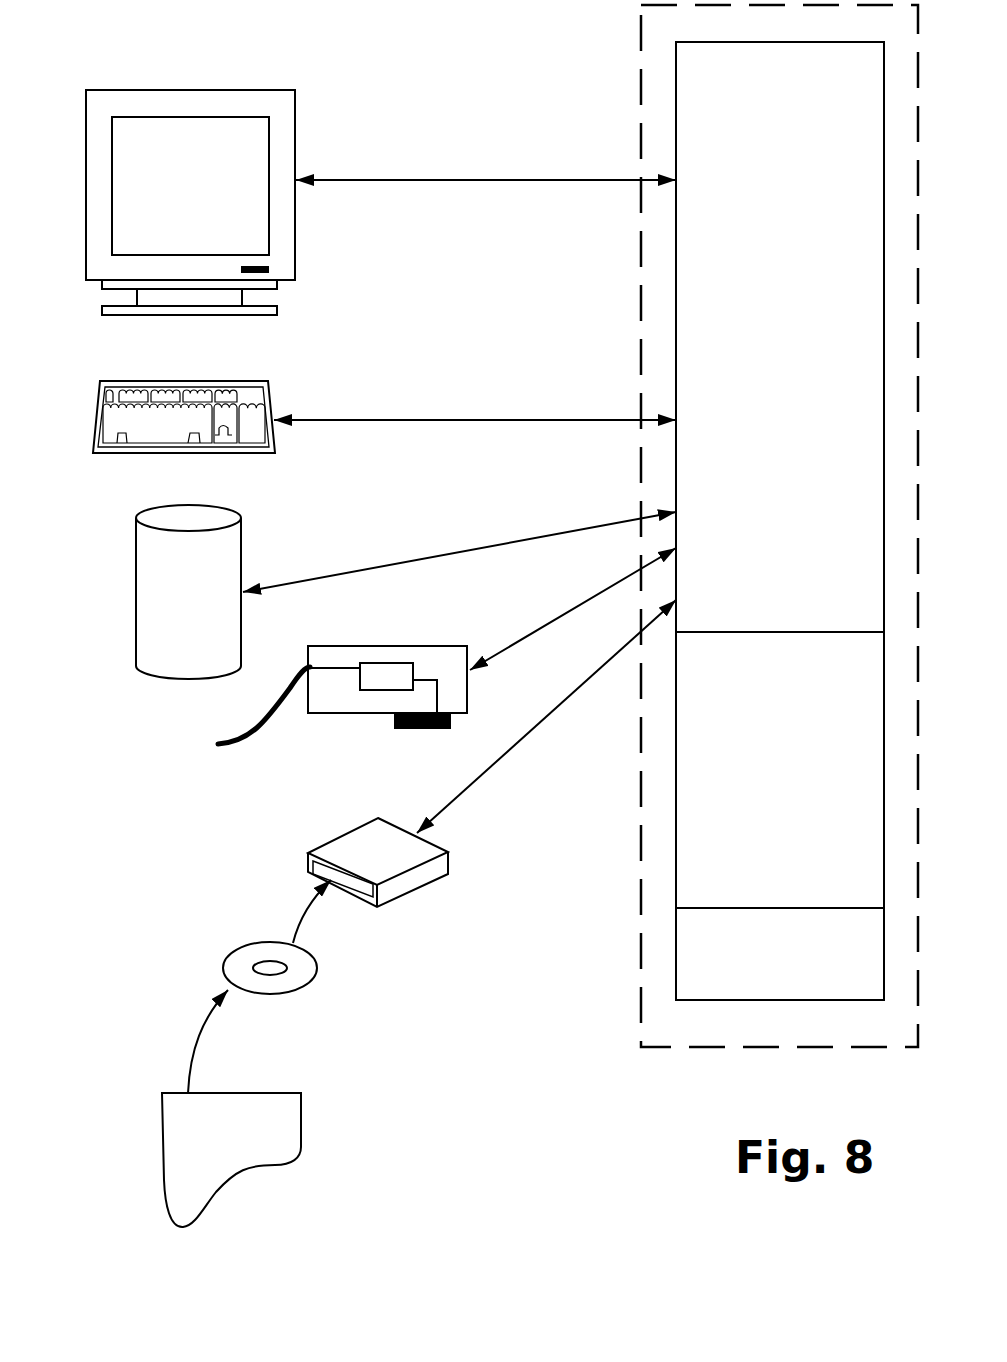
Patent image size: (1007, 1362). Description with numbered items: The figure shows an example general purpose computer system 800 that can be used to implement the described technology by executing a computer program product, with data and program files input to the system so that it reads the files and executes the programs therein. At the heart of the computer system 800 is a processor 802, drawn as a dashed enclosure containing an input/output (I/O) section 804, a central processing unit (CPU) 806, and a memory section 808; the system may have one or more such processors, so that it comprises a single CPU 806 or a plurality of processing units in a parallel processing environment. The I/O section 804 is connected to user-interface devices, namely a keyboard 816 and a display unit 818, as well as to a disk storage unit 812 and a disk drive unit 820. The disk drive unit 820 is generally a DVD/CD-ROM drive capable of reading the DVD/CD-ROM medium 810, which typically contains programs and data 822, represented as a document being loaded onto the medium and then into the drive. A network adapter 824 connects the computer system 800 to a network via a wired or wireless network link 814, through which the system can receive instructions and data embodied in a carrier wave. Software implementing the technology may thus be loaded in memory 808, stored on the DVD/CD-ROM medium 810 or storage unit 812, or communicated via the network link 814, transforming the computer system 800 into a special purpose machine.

The general purpose computer system 800 is at (596, 1142).
The processor 802 is at (643, 75).
The input/output (I/O) section 804 is at (780, 337).
The central processing unit (CPU) 806 is at (780, 770).
The memory section 808 is at (780, 954).
The DVD/CD-ROM medium 810 is at (240, 947).
The disk storage unit 812 is at (135, 540).
The network link 814 is at (245, 742).
The keyboard 816 is at (140, 381).
The display unit 818 is at (157, 88).
The disk drive unit 820 is at (360, 853).
The programs and data 822 is at (301, 1115).
The network adapter 824 is at (362, 716).